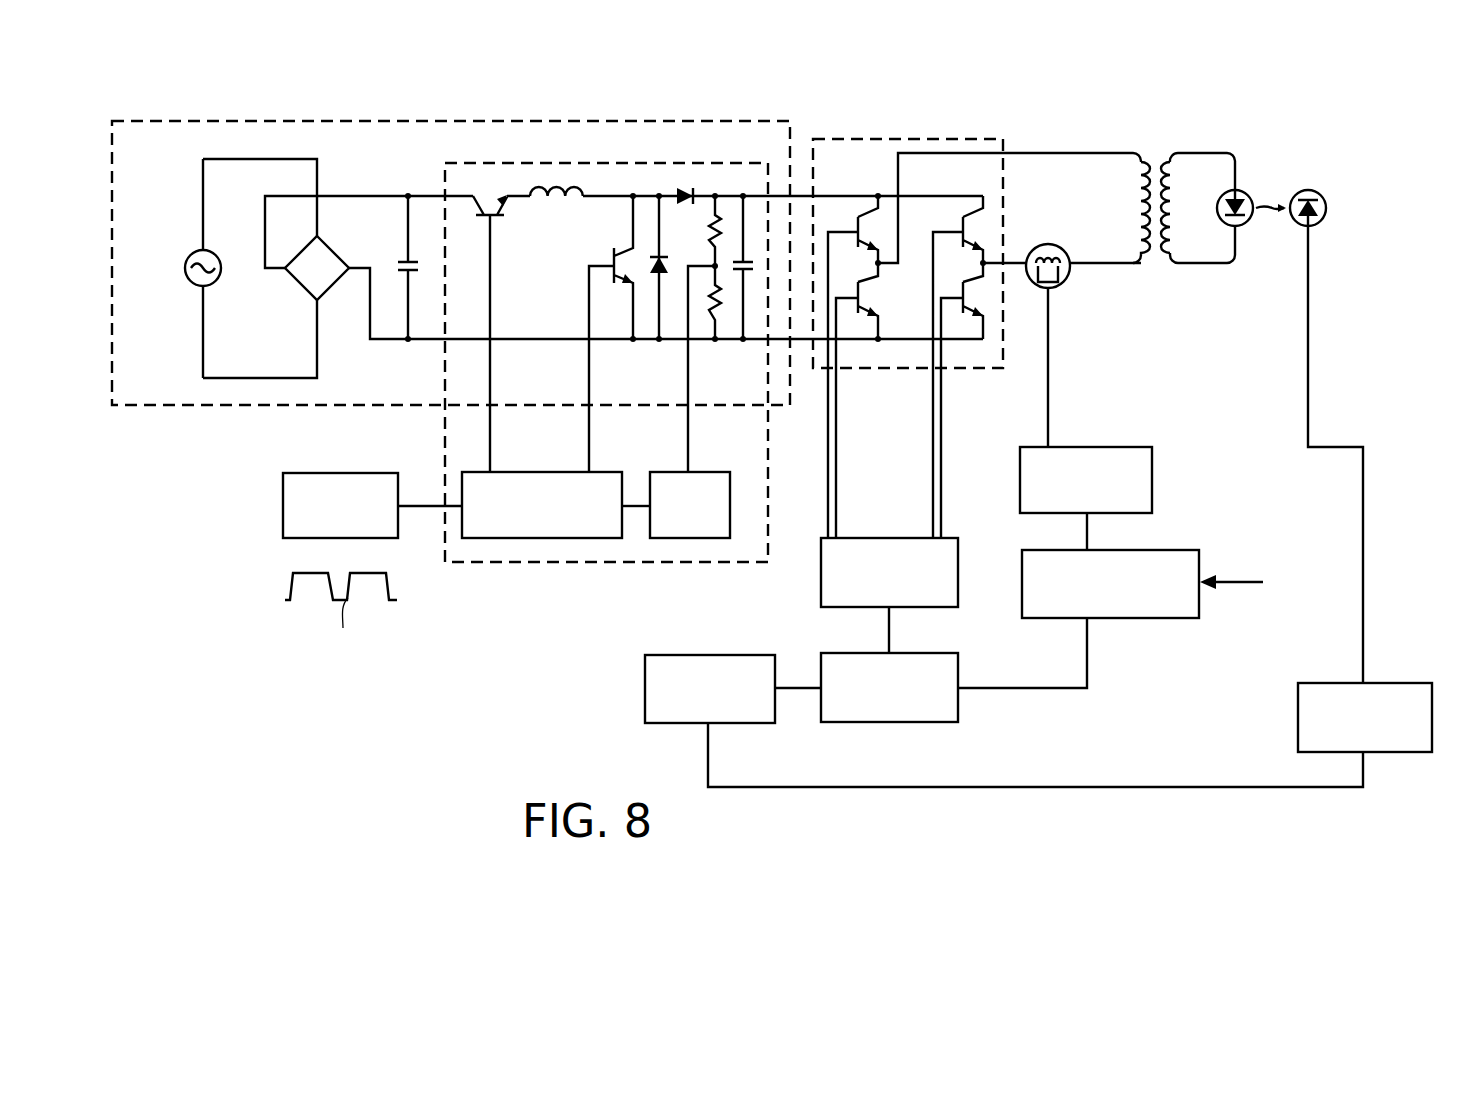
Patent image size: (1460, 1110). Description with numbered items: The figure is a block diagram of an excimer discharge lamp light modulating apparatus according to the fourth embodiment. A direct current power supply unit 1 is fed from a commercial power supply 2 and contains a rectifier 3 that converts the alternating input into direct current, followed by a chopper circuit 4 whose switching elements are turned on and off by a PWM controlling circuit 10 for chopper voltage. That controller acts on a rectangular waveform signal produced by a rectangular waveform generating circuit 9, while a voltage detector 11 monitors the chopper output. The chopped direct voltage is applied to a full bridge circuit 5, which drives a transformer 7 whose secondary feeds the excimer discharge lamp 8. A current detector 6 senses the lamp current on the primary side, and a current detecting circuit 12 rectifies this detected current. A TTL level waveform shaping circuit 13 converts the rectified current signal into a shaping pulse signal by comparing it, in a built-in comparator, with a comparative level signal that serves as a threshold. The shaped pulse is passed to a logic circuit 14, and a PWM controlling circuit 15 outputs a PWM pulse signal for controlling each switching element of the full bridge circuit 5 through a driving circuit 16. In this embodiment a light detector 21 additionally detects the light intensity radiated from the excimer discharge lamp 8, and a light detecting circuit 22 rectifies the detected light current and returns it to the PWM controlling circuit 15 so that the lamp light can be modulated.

The direct current power supply unit 1 is at (451, 244).
The commercial power supply 2 is at (166, 268).
The rectifier 3 is at (305, 268).
The chopper circuit 4 is at (714, 345).
The full bridge circuit 5 is at (972, 323).
The current detector 6 is at (1099, 345).
The transformer 7 is at (1144, 190).
The excimer discharge lamp 8 is at (1243, 195).
The rectangular waveform generating circuit 9 is at (343, 473).
The PWM controlling circuit for chopper voltage 10 is at (548, 472).
The voltage detector 11 is at (716, 472).
The current detecting circuit 12 is at (1110, 447).
The TTL level waveform shaping circuit 13 is at (1176, 550).
The logic circuit 14 is at (934, 653).
The PWM controlling circuit 15 is at (723, 655).
The driving circuit 16 is at (905, 538).
The light detector 21 is at (1361, 436).
The light detecting circuit 22 is at (1401, 683).